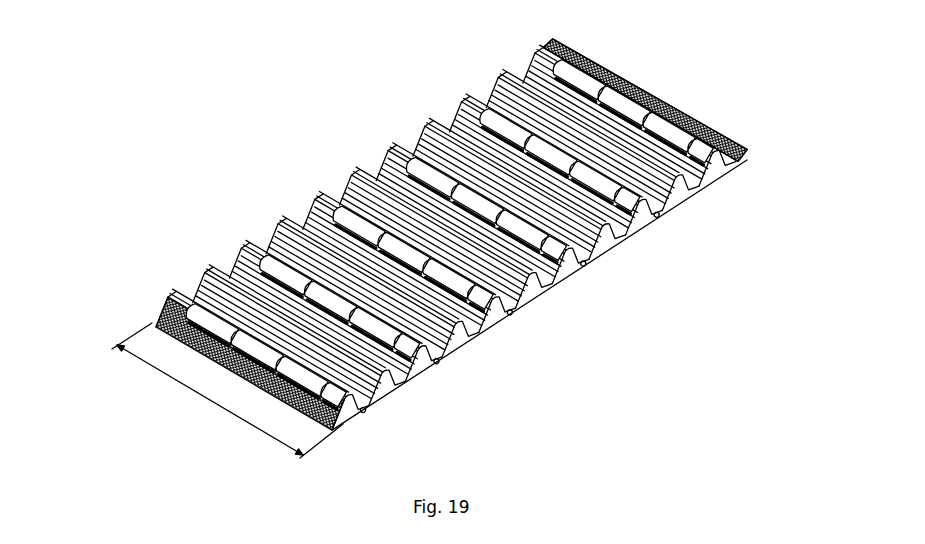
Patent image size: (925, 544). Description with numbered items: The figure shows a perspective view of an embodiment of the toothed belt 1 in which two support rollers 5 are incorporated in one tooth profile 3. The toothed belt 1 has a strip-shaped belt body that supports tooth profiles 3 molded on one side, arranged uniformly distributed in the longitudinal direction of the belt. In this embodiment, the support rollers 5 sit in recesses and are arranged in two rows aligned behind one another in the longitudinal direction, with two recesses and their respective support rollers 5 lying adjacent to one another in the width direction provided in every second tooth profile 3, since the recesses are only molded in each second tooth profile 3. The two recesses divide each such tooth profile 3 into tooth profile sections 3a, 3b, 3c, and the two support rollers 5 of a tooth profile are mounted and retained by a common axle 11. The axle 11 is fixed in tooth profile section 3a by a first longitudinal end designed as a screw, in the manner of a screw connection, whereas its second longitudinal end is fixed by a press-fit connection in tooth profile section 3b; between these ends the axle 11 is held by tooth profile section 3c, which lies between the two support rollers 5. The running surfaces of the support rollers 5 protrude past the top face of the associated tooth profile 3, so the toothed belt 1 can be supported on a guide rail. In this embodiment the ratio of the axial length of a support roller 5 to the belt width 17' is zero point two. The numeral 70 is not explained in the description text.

The toothed belt 1 is at (431, 271).
The tooth profile 3 is at (416, 127).
The tooth profile section 3a is at (735, 162).
The tooth profile section 3b is at (553, 58).
The tooth profile section 3c is at (636, 108).
The support roller 5 is at (592, 82).
The axle 11 is at (440, 362).
The belt width 17' is at (227, 424).
The serrated surface 70 is at (682, 112).